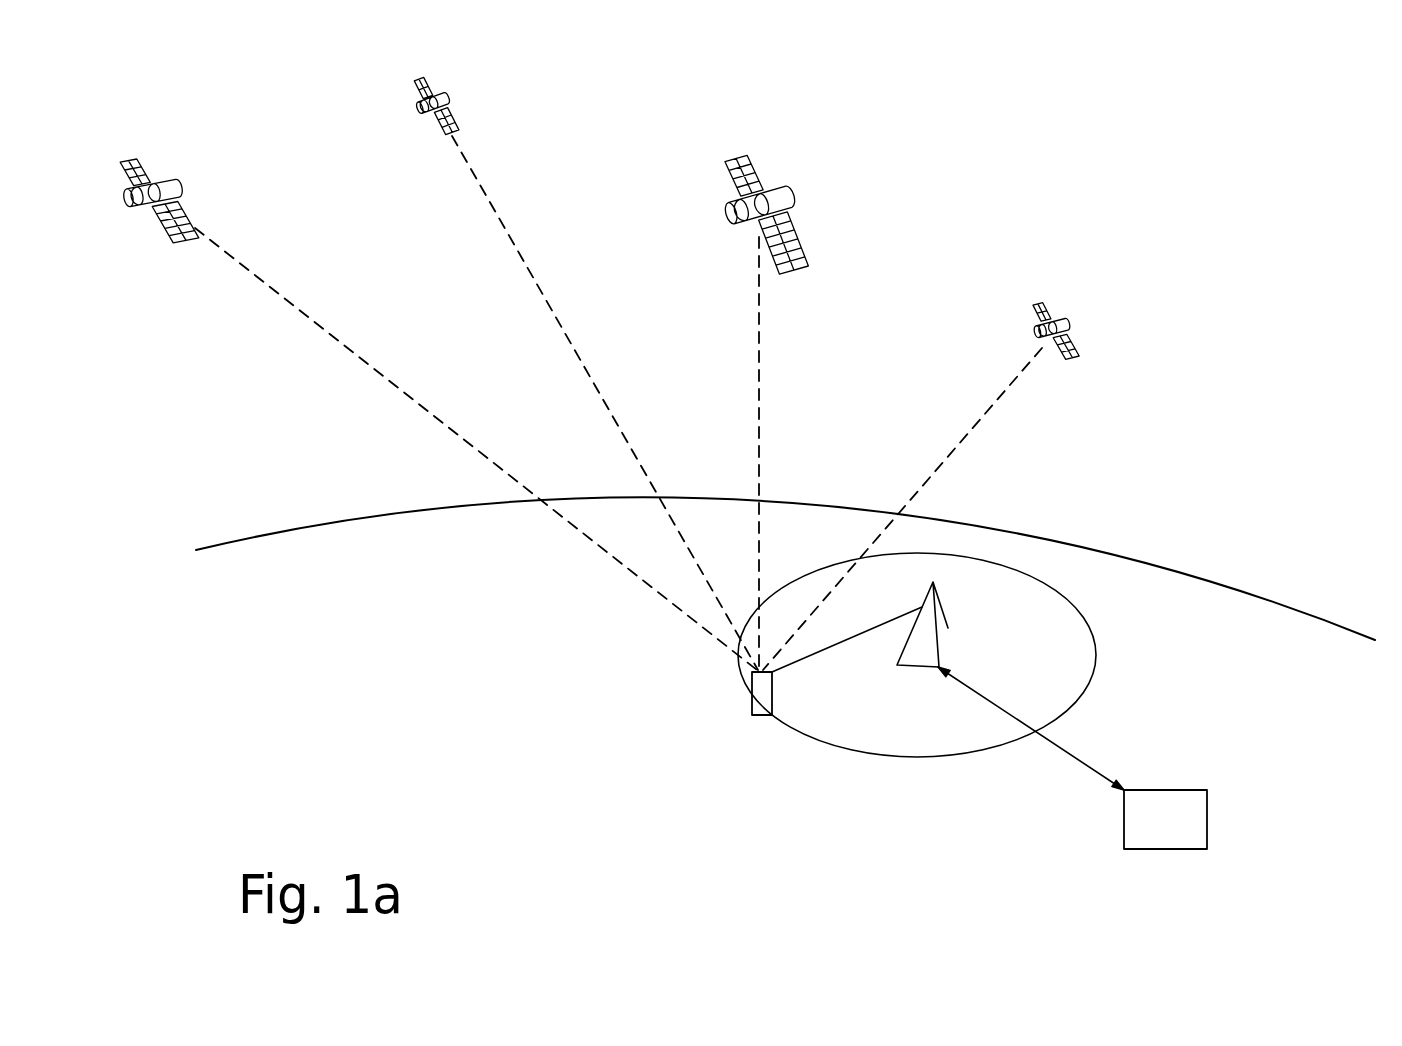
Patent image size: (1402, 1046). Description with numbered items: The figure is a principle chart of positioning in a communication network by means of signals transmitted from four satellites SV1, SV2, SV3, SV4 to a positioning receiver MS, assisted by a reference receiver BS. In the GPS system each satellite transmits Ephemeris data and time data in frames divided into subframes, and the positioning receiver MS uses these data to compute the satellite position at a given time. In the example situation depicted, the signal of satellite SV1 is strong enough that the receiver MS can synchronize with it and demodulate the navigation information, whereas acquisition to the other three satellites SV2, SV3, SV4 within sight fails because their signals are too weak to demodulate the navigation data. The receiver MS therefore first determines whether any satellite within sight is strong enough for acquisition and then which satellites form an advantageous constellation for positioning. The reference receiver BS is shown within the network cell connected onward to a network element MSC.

The satellite SV1 is at (415, 398).
The satellite SV2 is at (580, 357).
The satellite SV3 is at (766, 395).
The satellite SV4 is at (934, 463).
The positioning receiver MS is at (772, 693).
The reference receiver BS is at (945, 628).
The mobile switching center MSC is at (1207, 798).